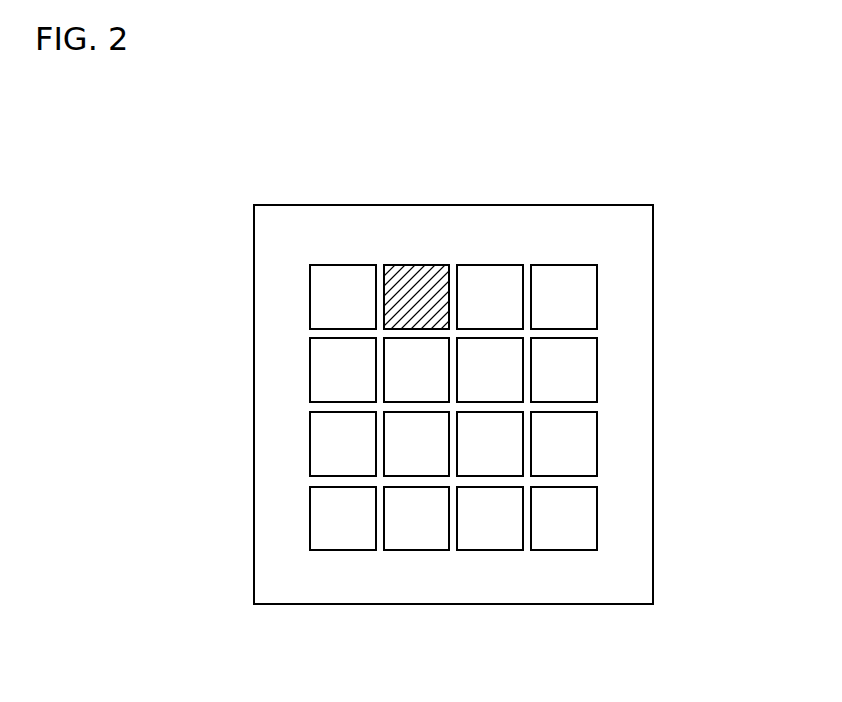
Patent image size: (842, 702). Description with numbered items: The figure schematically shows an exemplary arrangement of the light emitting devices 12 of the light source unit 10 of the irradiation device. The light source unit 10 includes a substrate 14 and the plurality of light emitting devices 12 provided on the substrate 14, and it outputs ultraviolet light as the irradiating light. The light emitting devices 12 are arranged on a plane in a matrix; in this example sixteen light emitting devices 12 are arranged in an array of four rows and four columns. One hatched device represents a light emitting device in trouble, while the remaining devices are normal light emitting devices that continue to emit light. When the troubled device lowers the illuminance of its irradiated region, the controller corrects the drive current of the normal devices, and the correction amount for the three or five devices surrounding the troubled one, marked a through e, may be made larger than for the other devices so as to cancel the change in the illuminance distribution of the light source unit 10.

The light source unit 10 is at (642, 188).
The light emitting devices 12 is at (348, 582).
The substrate 14 is at (254, 243).